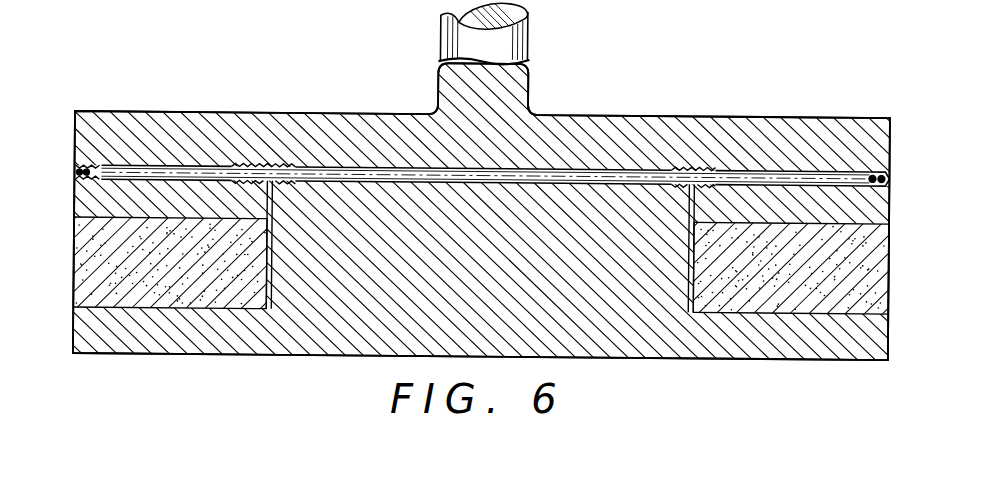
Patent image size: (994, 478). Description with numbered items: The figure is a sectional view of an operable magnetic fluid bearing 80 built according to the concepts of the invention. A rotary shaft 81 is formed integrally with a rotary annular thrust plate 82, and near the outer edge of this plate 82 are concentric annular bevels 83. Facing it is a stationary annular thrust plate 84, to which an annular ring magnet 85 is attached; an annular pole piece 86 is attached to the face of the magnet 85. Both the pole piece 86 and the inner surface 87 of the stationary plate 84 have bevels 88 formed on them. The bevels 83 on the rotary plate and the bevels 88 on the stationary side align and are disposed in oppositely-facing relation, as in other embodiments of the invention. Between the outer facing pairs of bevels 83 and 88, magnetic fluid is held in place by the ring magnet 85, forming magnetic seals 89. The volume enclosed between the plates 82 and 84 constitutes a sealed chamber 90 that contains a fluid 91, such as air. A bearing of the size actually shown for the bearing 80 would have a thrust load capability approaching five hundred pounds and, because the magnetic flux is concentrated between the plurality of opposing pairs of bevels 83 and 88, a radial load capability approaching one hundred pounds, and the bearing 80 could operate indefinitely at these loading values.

The magnetic fluid bearing 80 is at (626, 98).
The rotary shaft 81 is at (530, 34).
The rotary annular thrust plate 82 is at (308, 111).
The concentric annular bevels 83 is at (245, 161).
The stationary annular thrust plate 84 is at (474, 249).
The annular ring magnet 85 is at (183, 271).
The annular pole piece 86 is at (185, 208).
The inner surface 87 is at (459, 177).
The bevels 88 is at (712, 184).
The magnetic seals 89 is at (78, 170).
The sealed chamber 90 is at (331, 165).
The fluid 91 is at (377, 181).